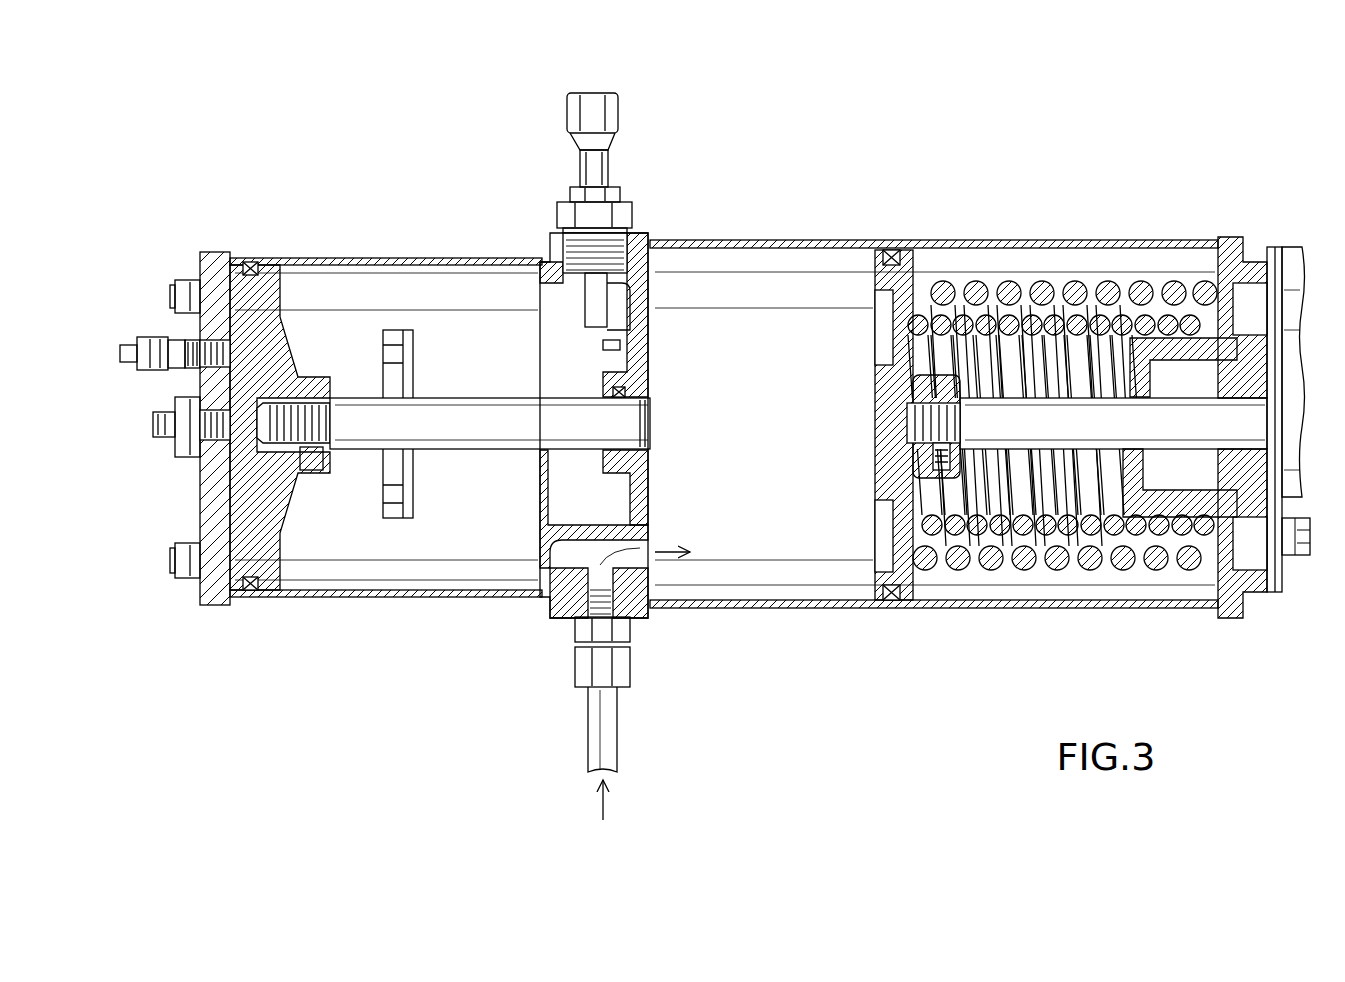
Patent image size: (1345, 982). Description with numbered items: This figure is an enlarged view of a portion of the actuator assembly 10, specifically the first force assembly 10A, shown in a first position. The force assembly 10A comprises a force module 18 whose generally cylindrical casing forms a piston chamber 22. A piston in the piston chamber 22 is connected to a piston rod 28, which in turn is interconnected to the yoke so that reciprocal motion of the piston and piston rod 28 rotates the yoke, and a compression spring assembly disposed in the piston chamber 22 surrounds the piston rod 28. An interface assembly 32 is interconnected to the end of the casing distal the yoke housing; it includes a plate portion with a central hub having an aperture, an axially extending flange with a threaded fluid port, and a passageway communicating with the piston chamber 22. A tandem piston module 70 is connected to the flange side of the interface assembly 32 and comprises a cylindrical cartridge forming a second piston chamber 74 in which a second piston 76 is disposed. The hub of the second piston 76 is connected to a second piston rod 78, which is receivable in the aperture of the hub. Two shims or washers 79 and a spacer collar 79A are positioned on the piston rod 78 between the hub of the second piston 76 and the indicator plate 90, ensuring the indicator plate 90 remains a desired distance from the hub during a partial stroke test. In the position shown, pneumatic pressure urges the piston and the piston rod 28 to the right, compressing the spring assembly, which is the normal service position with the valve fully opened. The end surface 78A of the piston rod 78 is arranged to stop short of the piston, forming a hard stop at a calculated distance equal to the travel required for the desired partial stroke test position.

The actuator assembly 10 is at (813, 150).
The first force assembly 10A is at (996, 165).
The force module 18 is at (1122, 195).
The piston chamber 22 is at (736, 495).
The piston rod 28 is at (1117, 422).
The interface assembly 32 is at (650, 225).
The tandem piston module 70 is at (440, 428).
The second piston chamber 74 is at (478, 360).
The second piston 76 is at (280, 265).
The second piston rod 78 is at (497, 425).
The end surface of piston rod 78A is at (650, 425).
The shim 79 is at (382, 395).
The spacer collar 79A is at (355, 460).
The indicator plate 90 is at (435, 535).